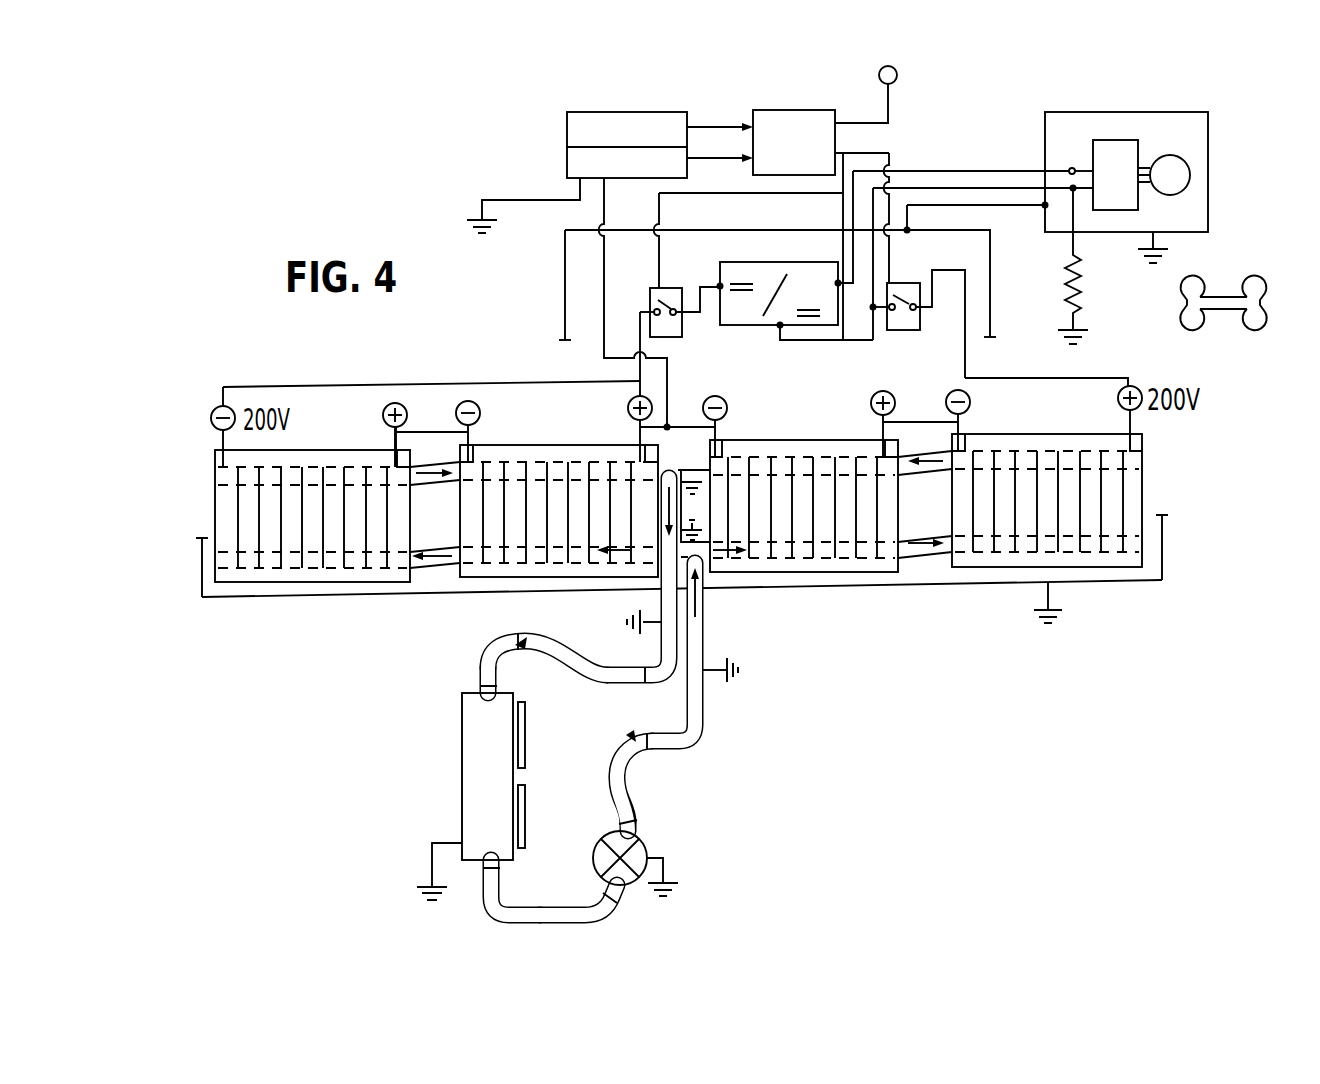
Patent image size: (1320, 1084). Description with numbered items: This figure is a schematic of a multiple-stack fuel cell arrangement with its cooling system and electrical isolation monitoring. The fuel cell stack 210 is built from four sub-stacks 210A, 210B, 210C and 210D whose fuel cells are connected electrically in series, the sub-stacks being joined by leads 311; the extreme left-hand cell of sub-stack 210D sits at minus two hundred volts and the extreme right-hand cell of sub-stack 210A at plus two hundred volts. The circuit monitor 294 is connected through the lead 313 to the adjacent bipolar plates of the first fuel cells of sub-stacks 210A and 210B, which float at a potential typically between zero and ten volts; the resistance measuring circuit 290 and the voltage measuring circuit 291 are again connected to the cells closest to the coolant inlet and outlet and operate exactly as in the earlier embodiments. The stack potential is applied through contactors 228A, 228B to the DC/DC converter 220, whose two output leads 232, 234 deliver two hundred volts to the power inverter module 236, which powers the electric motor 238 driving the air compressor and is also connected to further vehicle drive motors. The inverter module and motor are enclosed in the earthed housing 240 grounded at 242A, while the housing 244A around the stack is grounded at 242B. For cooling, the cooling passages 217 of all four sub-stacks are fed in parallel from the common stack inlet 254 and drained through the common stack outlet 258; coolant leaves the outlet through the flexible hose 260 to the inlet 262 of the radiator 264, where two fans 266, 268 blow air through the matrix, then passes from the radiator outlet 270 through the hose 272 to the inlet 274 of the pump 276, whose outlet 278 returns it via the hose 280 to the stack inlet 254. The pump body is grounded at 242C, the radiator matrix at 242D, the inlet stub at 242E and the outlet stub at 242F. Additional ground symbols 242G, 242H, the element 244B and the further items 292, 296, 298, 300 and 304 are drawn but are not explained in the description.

The fuel cell stack 210 is at (653, 530).
The sub-stack 210A is at (848, 566).
The sub-stack 210B is at (487, 576).
The sub-stack 210C is at (1108, 561).
The sub-stack 210D is at (275, 578).
The cooling passages 217 is at (237, 519).
The DC/DC converter 220 is at (762, 327).
The contactor 228A is at (893, 331).
The contactor 228B is at (682, 336).
The output lead 232 is at (938, 171).
The output lead 234 is at (983, 188).
The power inverter module 236 is at (1103, 140).
The electric motor 238 is at (1208, 177).
The earthed housing 240 is at (1160, 112).
The ground connection 242A is at (1160, 250).
The ground connection 242B is at (1046, 603).
The ground connection 242C is at (665, 878).
The ground connection 242D is at (432, 859).
The ground connection 242E is at (733, 671).
The ground connection 242F is at (627, 622).
The ground 242G is at (482, 201).
The ground 242H is at (1088, 341).
The housing 244A is at (237, 598).
The battery terminal conductor 244B is at (565, 283).
The stack inlet 254 is at (705, 606).
The stack outlet 258 is at (655, 480).
The flexible hose 260 is at (518, 656).
The radiator inlet 262 is at (478, 687).
The radiator 264 is at (462, 739).
The cooling fan 266 is at (525, 748).
The cooling fan 268 is at (525, 821).
The radiator outlet 270 is at (500, 869).
The flexible hose 272 is at (498, 904).
The pump inlet 274 is at (620, 894).
The pump 276 is at (634, 857).
The pump outlet 278 is at (640, 830).
The flexible hose 280 is at (636, 778).
The resistance measuring circuit 290 is at (567, 161).
The voltage measuring circuit 291 is at (567, 123).
The signal line 292 is at (710, 160).
The circuit monitor 294 is at (790, 126).
The resistor 296 is at (1082, 295).
The control line 298 is at (890, 153).
The terminal 300 is at (897, 75).
The signal line 304 is at (706, 125).
The leads 311 is at (412, 432).
The lead 313 is at (603, 213).